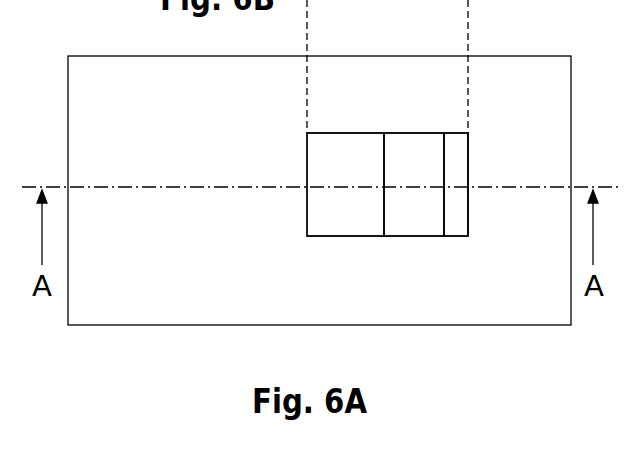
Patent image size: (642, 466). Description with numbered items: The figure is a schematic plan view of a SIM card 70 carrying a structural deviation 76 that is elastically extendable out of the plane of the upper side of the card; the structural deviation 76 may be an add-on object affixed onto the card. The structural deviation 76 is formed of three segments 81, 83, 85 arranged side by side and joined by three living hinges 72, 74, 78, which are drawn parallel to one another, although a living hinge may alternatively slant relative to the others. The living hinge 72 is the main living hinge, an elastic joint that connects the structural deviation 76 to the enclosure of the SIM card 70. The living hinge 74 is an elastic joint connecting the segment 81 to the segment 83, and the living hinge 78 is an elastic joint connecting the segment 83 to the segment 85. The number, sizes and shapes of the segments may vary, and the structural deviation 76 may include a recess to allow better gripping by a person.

The SIM card 70 is at (153, 325).
The living hinge 72 is at (303, 208).
The living hinge 74 is at (379, 206).
The structural deviation 76 is at (469, 243).
The living hinge 78 is at (443, 203).
The segment 81 is at (330, 163).
The segment 83 is at (407, 160).
The segment 85 is at (455, 153).